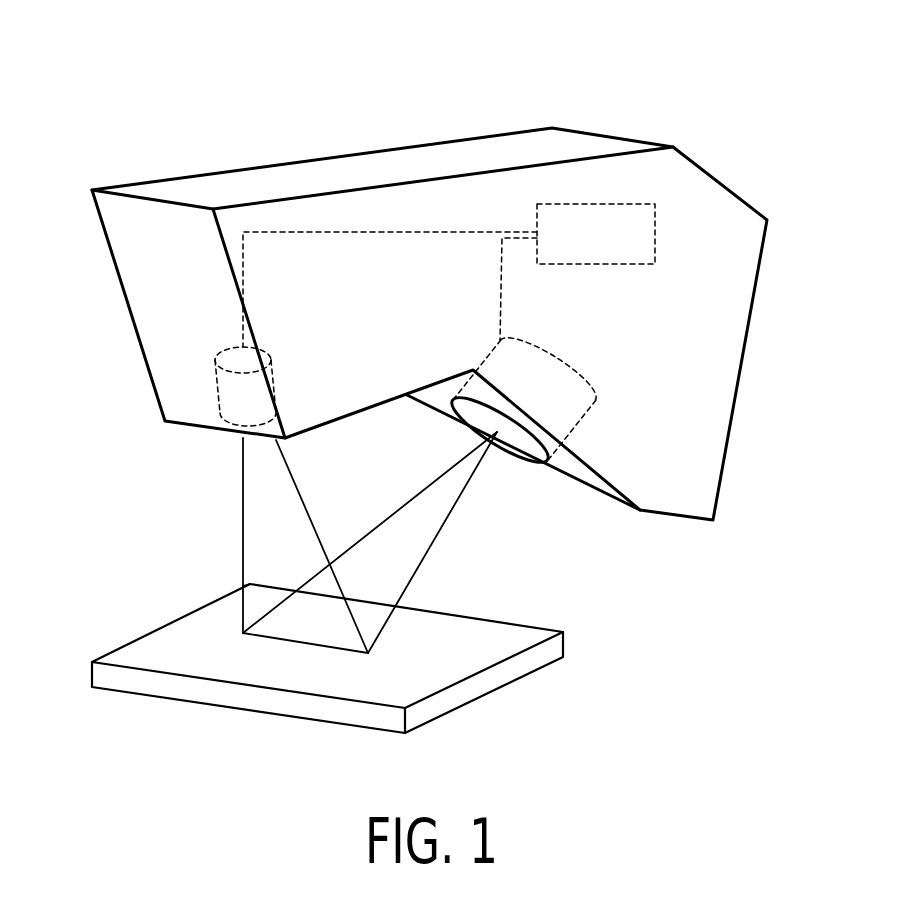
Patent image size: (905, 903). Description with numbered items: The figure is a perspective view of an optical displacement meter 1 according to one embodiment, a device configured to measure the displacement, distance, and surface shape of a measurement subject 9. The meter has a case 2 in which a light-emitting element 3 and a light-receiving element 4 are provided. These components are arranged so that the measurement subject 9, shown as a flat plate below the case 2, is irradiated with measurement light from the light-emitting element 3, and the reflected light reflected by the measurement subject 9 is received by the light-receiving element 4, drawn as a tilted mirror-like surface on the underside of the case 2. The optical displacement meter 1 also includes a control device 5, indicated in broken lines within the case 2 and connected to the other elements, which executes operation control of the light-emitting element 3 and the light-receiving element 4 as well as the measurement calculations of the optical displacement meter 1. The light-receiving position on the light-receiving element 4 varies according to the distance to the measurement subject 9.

The optical displacement meter 1 is at (128, 98).
The case 2 is at (242, 168).
The light-emitting element 3 is at (217, 378).
The light-receiving element 4 is at (532, 460).
The control device 5 is at (617, 204).
The measurement subject 9 is at (127, 642).